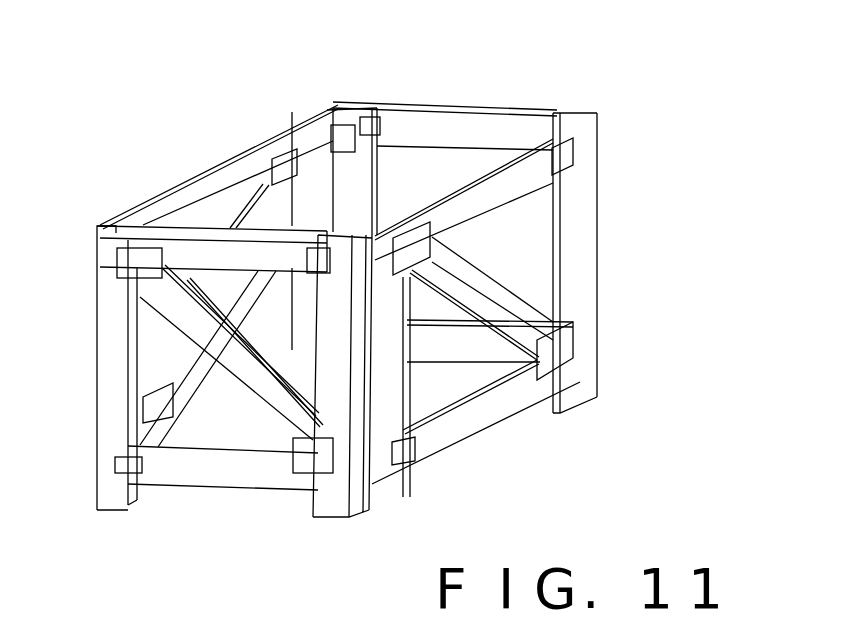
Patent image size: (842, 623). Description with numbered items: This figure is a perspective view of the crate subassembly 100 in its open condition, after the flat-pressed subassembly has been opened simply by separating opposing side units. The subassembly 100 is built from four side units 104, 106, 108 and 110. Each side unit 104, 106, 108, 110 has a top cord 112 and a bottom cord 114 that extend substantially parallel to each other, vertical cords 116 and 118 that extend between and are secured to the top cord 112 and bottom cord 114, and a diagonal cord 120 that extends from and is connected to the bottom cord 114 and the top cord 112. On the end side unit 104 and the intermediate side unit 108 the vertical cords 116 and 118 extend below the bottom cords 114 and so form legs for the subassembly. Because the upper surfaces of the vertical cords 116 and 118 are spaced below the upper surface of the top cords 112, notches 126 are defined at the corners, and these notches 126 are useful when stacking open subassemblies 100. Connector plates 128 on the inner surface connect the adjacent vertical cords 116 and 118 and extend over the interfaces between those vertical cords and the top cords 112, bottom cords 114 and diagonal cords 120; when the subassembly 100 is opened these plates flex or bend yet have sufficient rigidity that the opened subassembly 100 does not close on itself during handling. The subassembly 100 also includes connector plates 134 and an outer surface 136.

The crate subassembly 100 is at (441, 70).
The end side unit 104 is at (178, 487).
The side unit 106 is at (483, 432).
The intermediate side unit 108 is at (540, 105).
The side unit 110 is at (177, 190).
The top cord 112 is at (483, 100).
The bottom cord 114 is at (513, 380).
The vertical cord 116 is at (325, 110).
The vertical cord 118 is at (137, 208).
The diagonal cord 120 is at (490, 217).
The notch 126 is at (358, 105).
The connector plate 128 is at (283, 152).
The connector plate 134 is at (572, 147).
The outer surface 136 is at (108, 240).